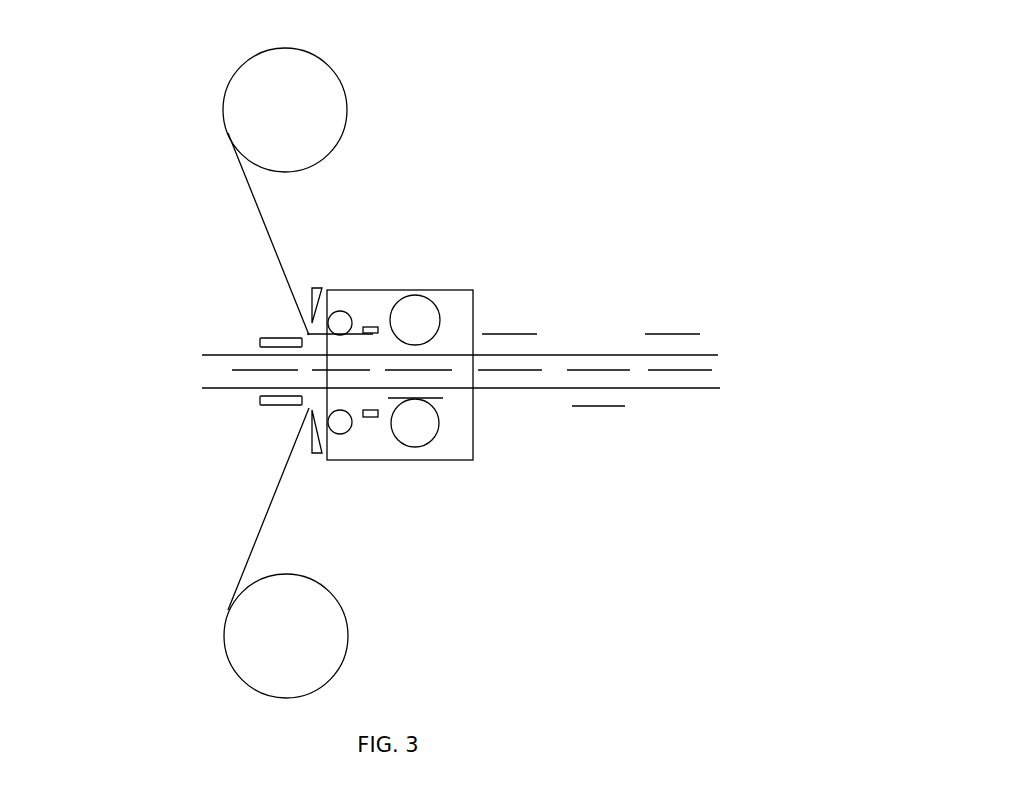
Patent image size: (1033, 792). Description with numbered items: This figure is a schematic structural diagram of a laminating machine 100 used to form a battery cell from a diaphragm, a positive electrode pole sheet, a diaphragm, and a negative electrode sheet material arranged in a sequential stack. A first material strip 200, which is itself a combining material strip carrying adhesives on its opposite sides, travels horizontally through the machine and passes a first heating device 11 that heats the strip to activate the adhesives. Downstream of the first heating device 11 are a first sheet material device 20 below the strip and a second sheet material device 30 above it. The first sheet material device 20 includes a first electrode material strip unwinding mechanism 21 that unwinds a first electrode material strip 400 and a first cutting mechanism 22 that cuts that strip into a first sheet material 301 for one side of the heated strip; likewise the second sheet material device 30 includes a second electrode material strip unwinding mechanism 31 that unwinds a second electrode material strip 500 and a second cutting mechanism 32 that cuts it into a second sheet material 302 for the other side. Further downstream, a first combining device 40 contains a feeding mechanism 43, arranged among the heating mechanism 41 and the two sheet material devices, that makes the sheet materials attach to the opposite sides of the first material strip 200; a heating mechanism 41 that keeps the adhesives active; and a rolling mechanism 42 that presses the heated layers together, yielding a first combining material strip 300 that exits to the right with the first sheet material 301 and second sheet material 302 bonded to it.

The laminating machine 100 is at (52, 31).
The first heating device 11 is at (262, 338).
The first sheet material device 20 is at (310, 554).
The first electrode material strip unwinding mechanism 21 is at (227, 627).
The first cutting mechanism 22 is at (320, 456).
The second sheet material device 30 is at (299, 185).
The second electrode material strip unwinding mechanism 31 is at (225, 127).
The second cutting mechanism 32 is at (316, 288).
The first combining device 40 is at (400, 381).
The heating mechanism 41 is at (372, 325).
The rolling mechanism 42 is at (418, 295).
The feeding mechanism 43 is at (334, 312).
The first material strip 200 is at (220, 418).
The first combining material strip 300 is at (595, 315).
The first sheet material 301 is at (605, 410).
The second sheet material 302 is at (513, 332).
The first electrode material strip 400 is at (257, 548).
The second electrode material strip 500 is at (262, 220).